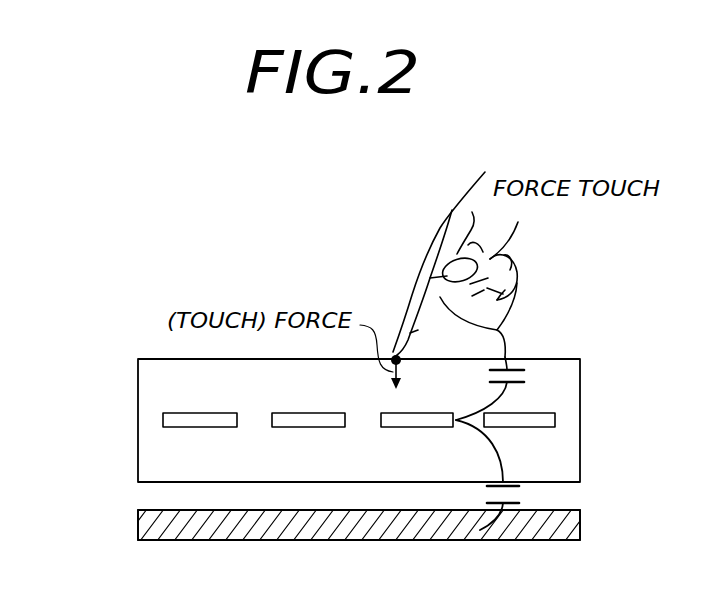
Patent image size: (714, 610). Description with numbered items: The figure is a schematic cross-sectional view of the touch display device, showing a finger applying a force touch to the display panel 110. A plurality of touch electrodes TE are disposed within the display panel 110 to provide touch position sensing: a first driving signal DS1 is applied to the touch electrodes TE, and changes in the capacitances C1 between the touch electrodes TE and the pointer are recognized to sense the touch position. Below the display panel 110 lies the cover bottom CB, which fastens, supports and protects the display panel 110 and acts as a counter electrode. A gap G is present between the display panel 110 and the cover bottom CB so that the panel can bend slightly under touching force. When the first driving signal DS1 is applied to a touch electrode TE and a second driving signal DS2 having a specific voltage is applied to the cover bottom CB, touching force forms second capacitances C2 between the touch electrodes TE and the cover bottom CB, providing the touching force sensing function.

The display panel 110 is at (558, 358).
The first driving signal DS1 is at (153, 420).
The second driving signal DS2 is at (128, 527).
The touch electrode TE is at (555, 419).
The cover bottom CB is at (575, 528).
The capacitance C1 is at (505, 388).
The second capacitance C2 is at (505, 475).
The gap G is at (188, 486).